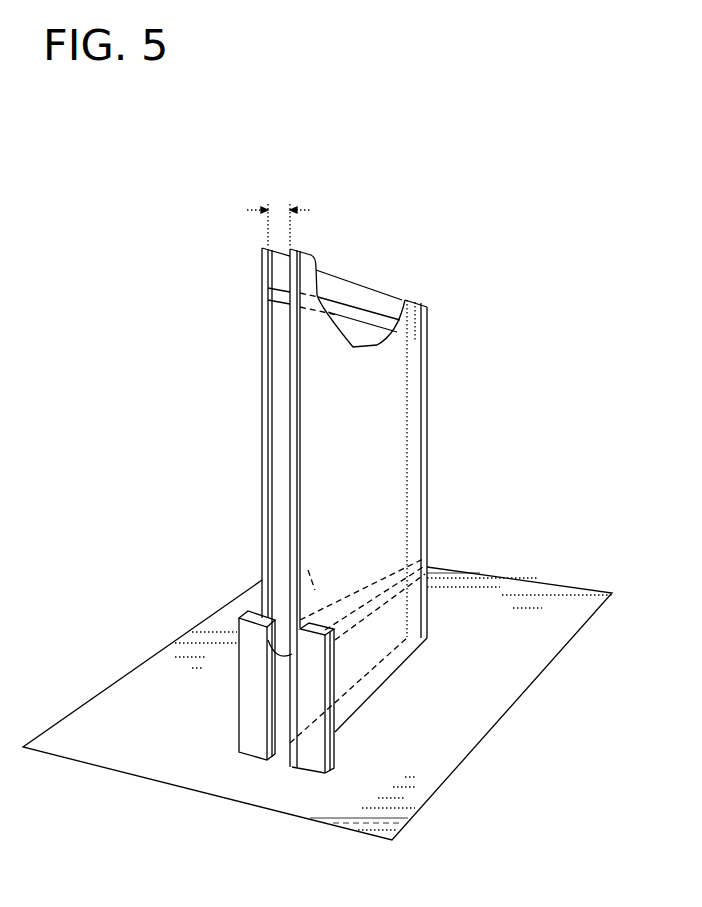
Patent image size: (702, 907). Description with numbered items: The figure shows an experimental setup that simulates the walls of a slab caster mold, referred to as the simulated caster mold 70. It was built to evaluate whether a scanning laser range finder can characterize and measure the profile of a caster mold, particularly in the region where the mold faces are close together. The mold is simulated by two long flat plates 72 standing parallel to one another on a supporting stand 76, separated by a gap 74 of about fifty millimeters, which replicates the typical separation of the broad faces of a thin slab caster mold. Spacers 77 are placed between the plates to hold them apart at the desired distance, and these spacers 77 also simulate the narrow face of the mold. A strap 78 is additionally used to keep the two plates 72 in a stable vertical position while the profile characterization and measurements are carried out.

The simulated caster mold 70 is at (316, 450).
The long flat plates 72 is at (262, 403).
The gap 74 is at (280, 207).
The supporting stand 76 is at (450, 740).
The spacers 77 is at (352, 313).
The strap 78 is at (256, 657).